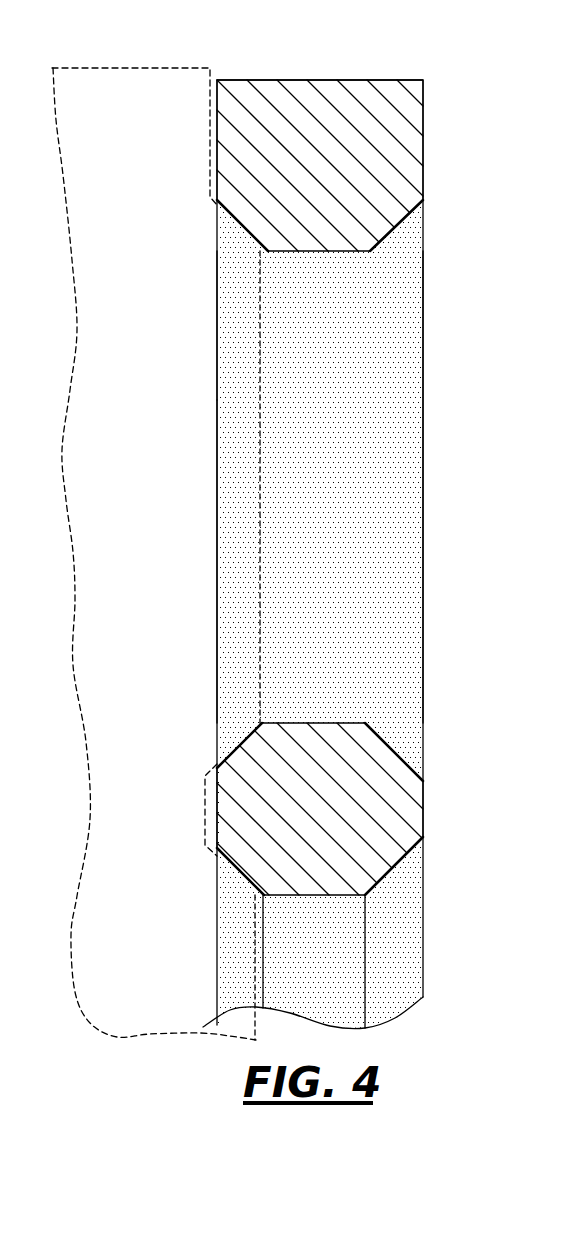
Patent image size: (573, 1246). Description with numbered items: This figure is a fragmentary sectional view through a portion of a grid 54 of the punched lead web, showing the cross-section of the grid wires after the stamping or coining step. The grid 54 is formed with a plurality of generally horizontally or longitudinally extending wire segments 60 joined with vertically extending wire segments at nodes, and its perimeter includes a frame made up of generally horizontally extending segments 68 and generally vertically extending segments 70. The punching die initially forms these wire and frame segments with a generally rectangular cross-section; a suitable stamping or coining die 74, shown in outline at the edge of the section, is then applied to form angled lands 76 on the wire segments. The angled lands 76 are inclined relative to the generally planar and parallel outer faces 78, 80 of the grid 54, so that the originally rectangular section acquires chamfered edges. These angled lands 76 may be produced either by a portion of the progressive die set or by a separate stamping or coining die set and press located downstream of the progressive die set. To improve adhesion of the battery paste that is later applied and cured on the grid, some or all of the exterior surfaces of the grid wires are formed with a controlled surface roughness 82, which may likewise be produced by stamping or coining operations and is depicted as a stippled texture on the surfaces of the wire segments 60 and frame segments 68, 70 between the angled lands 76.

The grid 54 is at (183, 116).
The horizontally extending wire segment 60 is at (240, 827).
The horizontally extending frame segment 68 is at (265, 128).
The vertically extending frame segment 70 is at (240, 977).
The stamping or coining die 74 is at (88, 67).
The angled land 76 is at (227, 239).
The outer face 78 is at (217, 278).
The outer face 80 is at (420, 376).
The controlled surface roughness 82 is at (238, 484).